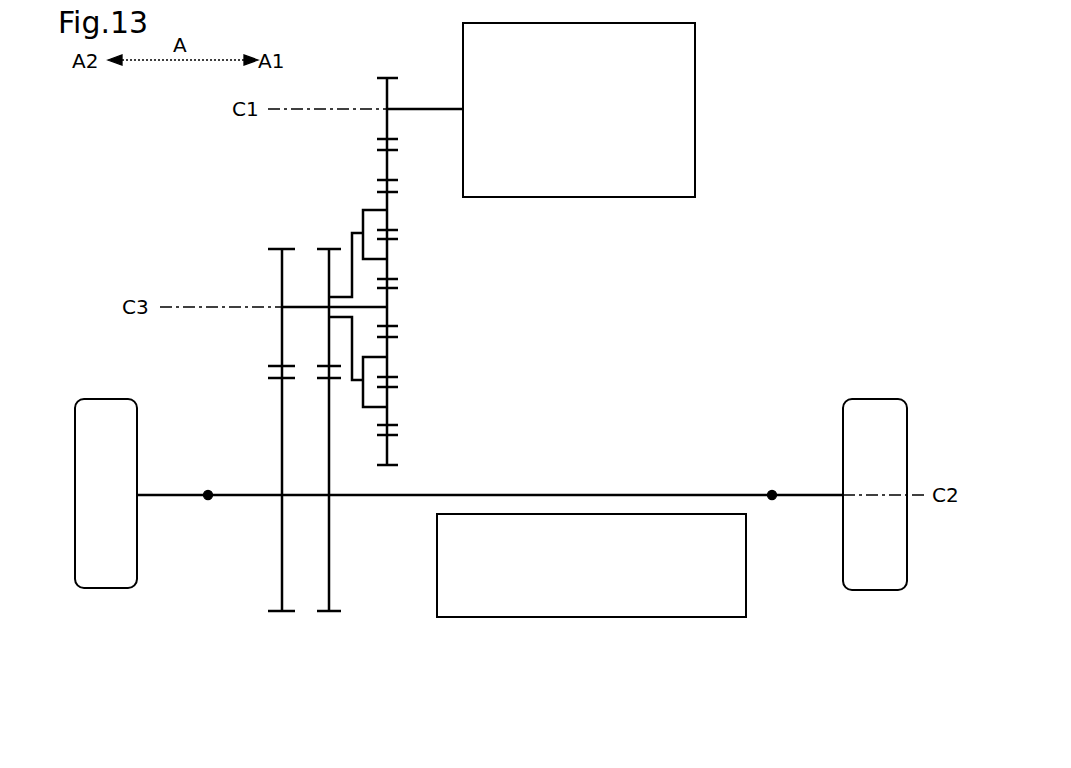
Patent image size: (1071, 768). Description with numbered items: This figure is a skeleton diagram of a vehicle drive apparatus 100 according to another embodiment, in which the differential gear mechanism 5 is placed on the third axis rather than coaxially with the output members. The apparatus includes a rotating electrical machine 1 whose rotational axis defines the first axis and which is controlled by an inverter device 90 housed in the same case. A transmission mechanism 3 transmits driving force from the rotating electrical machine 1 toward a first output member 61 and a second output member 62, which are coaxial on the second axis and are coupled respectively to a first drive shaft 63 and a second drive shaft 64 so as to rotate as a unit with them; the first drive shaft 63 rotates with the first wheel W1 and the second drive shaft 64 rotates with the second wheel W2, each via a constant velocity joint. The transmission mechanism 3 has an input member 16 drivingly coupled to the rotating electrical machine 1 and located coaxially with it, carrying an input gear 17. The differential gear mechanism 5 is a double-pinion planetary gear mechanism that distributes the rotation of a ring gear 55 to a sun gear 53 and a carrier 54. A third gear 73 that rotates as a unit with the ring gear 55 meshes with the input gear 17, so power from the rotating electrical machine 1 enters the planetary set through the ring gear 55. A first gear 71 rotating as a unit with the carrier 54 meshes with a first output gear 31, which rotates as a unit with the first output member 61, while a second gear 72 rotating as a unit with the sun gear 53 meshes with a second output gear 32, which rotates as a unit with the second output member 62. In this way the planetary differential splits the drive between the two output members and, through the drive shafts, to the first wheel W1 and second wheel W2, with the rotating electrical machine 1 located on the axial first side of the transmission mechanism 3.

The rotating electrical machine 1 is at (695, 70).
The vehicle drive apparatus 100 is at (832, 130).
The input member 16 is at (431, 107).
The input gear 17 is at (385, 76).
The differential gear mechanism 5 is at (422, 298).
The sun gear 53 is at (390, 325).
The carrier 54 is at (362, 222).
The ring gear 55 is at (392, 436).
The third gear 73 is at (390, 466).
The transmission mechanism 3 is at (309, 197).
The first gear 71 is at (325, 246).
The second gear 72 is at (278, 246).
The first output gear 31 is at (318, 612).
The second output gear 32 is at (285, 612).
The inverter device 90 is at (579, 617).
The first output member 61 is at (653, 493).
The second output member 62 is at (240, 492).
The first drive shaft 63 is at (808, 497).
The second drive shaft 64 is at (168, 497).
The first wheel W1 is at (880, 405).
The second wheel W2 is at (107, 405).